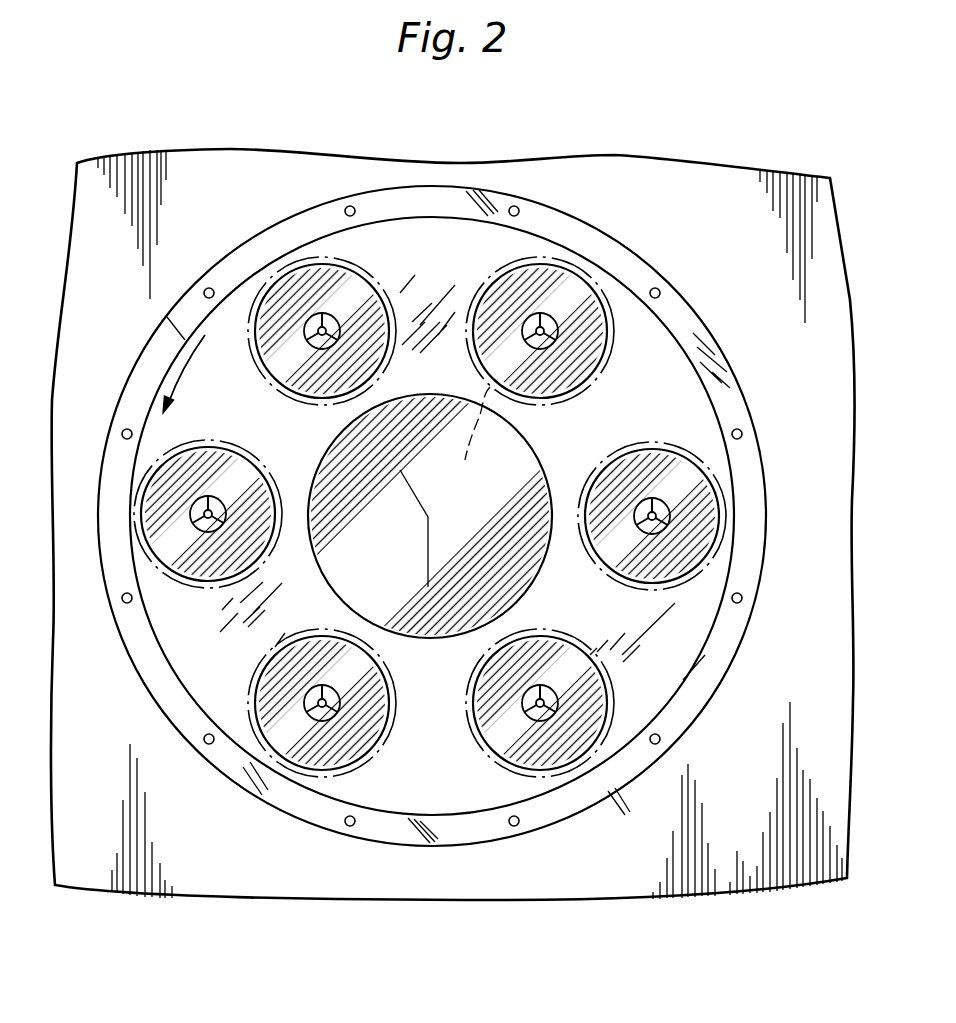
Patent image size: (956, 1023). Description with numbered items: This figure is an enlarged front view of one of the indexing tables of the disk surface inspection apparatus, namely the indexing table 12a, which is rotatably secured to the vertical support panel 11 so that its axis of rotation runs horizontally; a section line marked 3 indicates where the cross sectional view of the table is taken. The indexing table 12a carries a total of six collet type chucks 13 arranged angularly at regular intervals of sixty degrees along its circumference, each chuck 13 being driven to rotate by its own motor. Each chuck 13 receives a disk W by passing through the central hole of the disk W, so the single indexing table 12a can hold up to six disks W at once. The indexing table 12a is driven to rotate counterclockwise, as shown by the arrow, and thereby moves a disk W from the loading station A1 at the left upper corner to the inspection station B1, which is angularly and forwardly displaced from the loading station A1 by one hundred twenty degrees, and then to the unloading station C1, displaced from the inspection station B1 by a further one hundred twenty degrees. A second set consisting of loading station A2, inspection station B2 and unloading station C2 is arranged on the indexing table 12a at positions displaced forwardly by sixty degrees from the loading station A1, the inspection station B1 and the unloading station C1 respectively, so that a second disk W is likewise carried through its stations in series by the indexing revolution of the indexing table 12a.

The vertical support panel 11 is at (808, 492).
The indexing table 12a is at (662, 656).
The collet type chuck 13 is at (332, 320).
The section line of FIG. 3 is at (255, 218).
The loading station A1 is at (255, 283).
The loading station A2 is at (132, 517).
The inspection station B1 is at (270, 765).
The inspection station B2 is at (586, 770).
The unloading station C1 is at (720, 555).
The unloading station C2 is at (622, 278).
The disk W is at (286, 478).